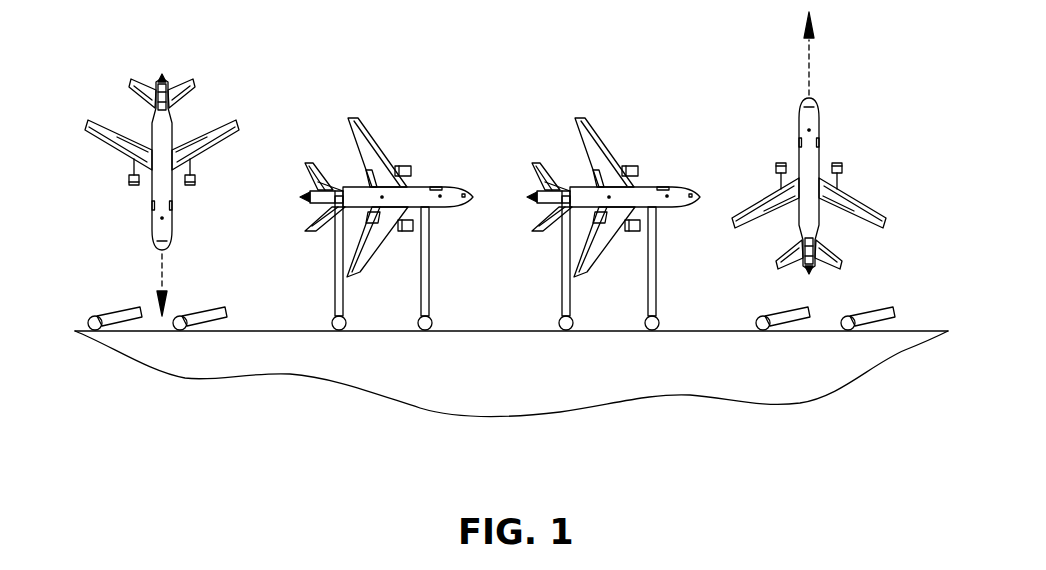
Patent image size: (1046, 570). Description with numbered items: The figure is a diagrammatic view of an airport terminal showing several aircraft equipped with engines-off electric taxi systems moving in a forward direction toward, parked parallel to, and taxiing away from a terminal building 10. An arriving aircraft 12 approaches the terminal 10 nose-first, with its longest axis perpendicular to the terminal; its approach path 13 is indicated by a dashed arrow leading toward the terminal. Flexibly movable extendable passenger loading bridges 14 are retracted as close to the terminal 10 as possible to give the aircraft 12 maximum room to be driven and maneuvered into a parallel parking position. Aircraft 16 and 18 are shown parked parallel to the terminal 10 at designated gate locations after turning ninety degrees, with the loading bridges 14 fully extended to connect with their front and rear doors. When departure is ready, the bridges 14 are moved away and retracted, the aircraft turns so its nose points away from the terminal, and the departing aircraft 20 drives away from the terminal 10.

The airport terminal building 10 is at (793, 357).
The arriving aircraft 12 is at (207, 118).
The landing approach direction of aircraft 13 is at (157, 251).
The flexibly movable extendable passenger loading bridge 14 is at (118, 307).
The parked aircraft 16 is at (402, 148).
The parked aircraft 18 is at (629, 148).
The departing aircraft 20 is at (845, 126).